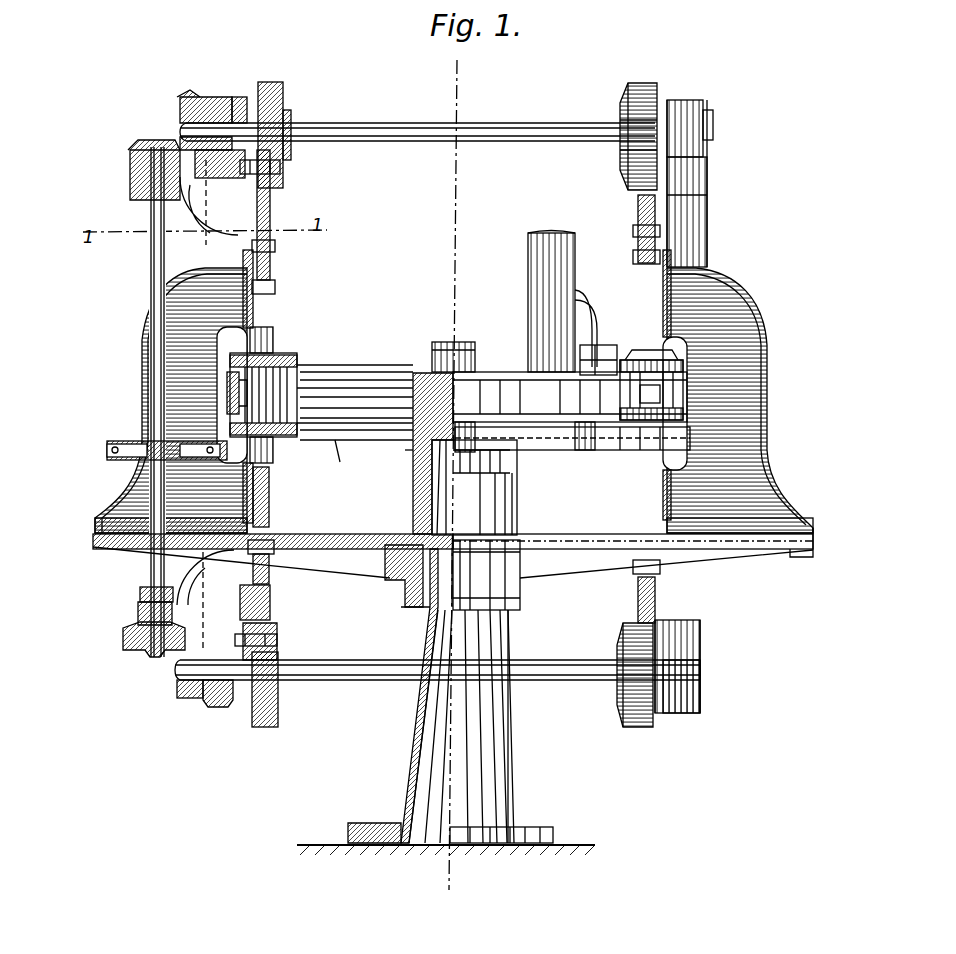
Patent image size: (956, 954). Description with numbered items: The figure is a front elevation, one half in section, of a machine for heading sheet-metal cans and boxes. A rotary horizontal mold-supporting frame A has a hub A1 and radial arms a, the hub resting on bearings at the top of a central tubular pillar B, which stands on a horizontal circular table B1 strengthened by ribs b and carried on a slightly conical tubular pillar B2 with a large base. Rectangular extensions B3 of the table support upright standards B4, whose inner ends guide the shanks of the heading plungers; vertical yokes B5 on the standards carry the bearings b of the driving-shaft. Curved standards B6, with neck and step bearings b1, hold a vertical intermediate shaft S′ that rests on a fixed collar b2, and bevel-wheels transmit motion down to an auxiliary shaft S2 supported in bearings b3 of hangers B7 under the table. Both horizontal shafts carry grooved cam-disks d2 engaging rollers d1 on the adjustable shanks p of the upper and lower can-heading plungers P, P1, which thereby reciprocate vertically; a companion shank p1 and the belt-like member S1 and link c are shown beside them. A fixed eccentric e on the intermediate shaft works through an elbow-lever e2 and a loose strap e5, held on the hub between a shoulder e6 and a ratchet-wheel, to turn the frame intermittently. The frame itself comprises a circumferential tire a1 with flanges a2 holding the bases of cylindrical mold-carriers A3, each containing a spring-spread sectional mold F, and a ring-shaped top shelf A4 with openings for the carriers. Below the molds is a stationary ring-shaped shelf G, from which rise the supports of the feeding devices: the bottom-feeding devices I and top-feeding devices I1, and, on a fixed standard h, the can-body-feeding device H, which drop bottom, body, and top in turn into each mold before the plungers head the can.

The vertical intermediate shaft S′ is at (417, 121).
The auxiliary shaft S2 is at (437, 685).
The belt S1 is at (167, 402).
The grooved cam-disks d2 is at (454, 407).
The anti-friction rollers d1 is at (280, 168).
The bearings b is at (453, 331).
The neck and step bearing b1 is at (138, 616).
The fixed collar b2 is at (140, 590).
The bearings b3 is at (438, 698).
The central tubular pillar B is at (360, 505).
The horizontal circular table B1 is at (450, 490).
The tubular pillar B2 is at (385, 728).
The rectangular extensions B3 is at (815, 552).
The upright standards B4 is at (780, 384).
The vertical yokes B5 is at (710, 192).
The outwardly-curved standard B6 is at (207, 405).
The hangers B7 is at (705, 635).
The adjustable shanks p is at (456, 222).
The lower vertical rod p1 is at (638, 590).
The can-heading plunger P is at (698, 362).
The can-heading plunger P1 is at (622, 445).
The mold-supporting frame A is at (570, 397).
The hub A1 is at (355, 378).
The cylindrical mold-carriers A3 is at (235, 390).
The ring-shaped shelf A4 is at (706, 378).
The radial arms a is at (351, 396).
The circumferential tire a1 is at (324, 386).
The circumferential shoulders or flanges a2 is at (313, 394).
The sectional mold F is at (232, 400).
The stationary ring-shaped shelf G is at (468, 446).
The can-body-feeding device H is at (537, 302).
The fixed standard h is at (593, 328).
The can-bottom-feeding devices I is at (460, 357).
The top-feeding devices I1 is at (600, 351).
The fixed eccentric e is at (175, 458).
The elbow-lever e2 is at (413, 458).
The loose strap e5 is at (413, 445).
The shoulder e6 is at (356, 431).
The link c is at (337, 451).